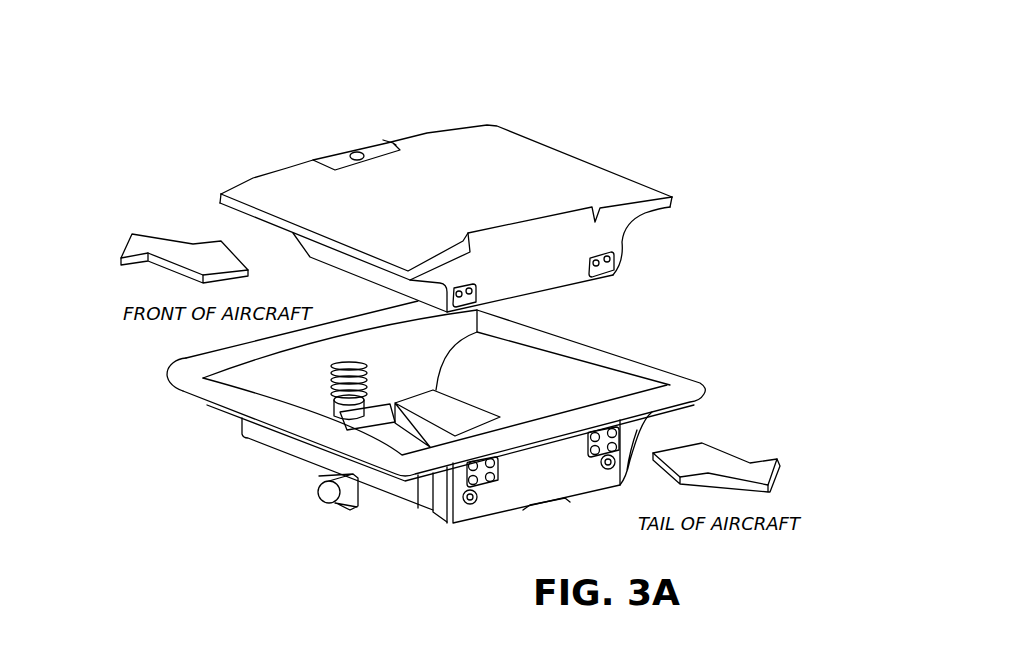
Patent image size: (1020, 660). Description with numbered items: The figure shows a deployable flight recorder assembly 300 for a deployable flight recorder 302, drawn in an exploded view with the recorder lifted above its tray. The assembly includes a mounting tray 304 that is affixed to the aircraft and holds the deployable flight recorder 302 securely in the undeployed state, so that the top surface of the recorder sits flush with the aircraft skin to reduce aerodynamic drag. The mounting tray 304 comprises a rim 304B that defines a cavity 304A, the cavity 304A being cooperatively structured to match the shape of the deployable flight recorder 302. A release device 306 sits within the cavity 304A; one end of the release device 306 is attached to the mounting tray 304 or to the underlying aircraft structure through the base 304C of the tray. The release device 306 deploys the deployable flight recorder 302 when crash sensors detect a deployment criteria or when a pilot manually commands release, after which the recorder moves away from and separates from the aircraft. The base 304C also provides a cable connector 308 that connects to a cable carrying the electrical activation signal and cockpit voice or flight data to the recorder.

The deployable flight recorder assembly 300 is at (722, 72).
The deployable flight recorder 302 is at (233, 176).
The mounting tray 304 is at (420, 377).
The cavity 304A is at (297, 368).
The rim 304B is at (170, 377).
The base 304C is at (463, 530).
The release device 306 is at (326, 401).
The cable connector 308 is at (326, 512).